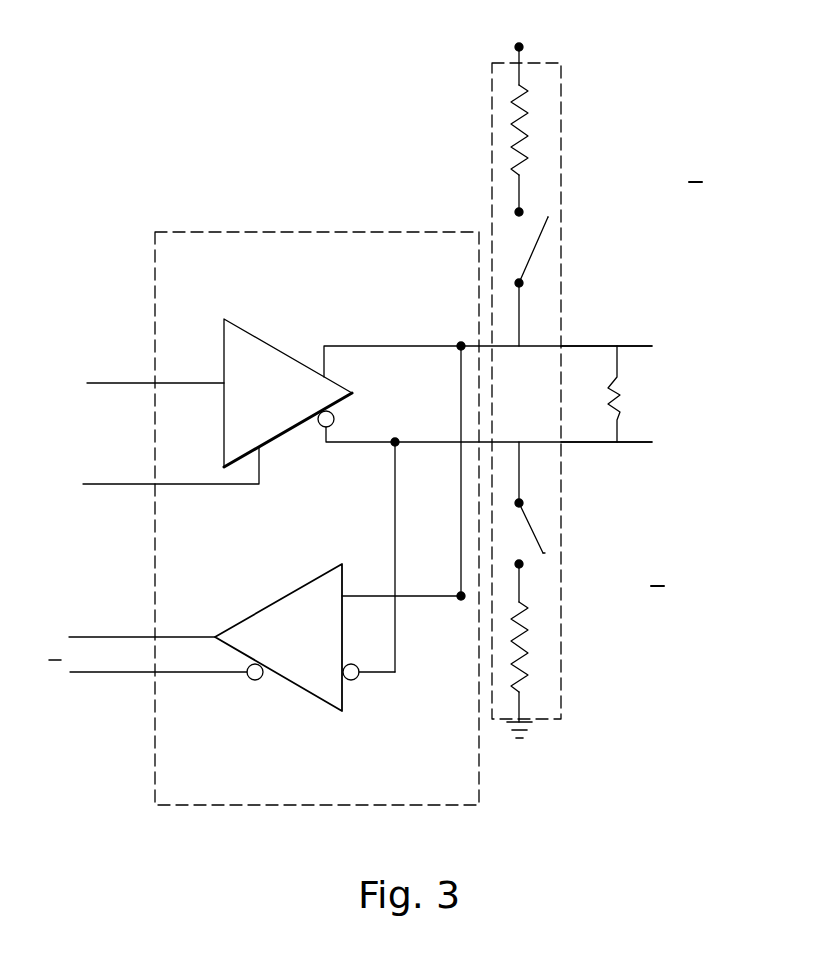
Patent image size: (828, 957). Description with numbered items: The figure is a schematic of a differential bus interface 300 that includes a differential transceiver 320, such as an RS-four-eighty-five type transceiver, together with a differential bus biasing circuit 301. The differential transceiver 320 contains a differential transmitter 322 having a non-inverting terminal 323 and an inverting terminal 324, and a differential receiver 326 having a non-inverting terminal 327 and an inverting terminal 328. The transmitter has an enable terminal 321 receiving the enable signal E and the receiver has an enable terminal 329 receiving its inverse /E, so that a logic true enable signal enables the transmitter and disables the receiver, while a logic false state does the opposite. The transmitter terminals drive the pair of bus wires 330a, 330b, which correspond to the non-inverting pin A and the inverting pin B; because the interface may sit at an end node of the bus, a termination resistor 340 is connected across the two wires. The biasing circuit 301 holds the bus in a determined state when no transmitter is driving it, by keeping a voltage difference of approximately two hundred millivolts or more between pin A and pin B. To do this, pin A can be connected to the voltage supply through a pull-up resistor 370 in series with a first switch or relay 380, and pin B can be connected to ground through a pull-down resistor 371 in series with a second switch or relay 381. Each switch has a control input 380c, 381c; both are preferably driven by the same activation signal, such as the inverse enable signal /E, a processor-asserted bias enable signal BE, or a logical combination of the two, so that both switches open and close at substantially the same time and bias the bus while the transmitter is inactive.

The differential bus interface 300 is at (122, 120).
The differential bus biasing circuit 301 is at (561, 78).
The differential transceiver 320 is at (312, 232).
The enable terminal 321 is at (263, 464).
The differential transmitter 322 is at (250, 332).
The non-inverting terminal 323 is at (340, 346).
The inverting terminal 324 is at (334, 417).
The differential receiver 326 is at (262, 609).
The non-inverting terminal 327 is at (374, 596).
The inverting terminal 328 is at (351, 681).
The enable terminal 329 is at (255, 681).
The wire 330a is at (588, 346).
The wire 330b is at (583, 443).
The termination resistor 340 is at (622, 392).
The pull-up resistor 370 is at (579, 131).
The pull-down resistor 371 is at (577, 643).
The first switch or relay 380 is at (588, 263).
The control input 380c is at (548, 217).
The second switch or relay 381 is at (580, 525).
The control input 381c is at (545, 553).